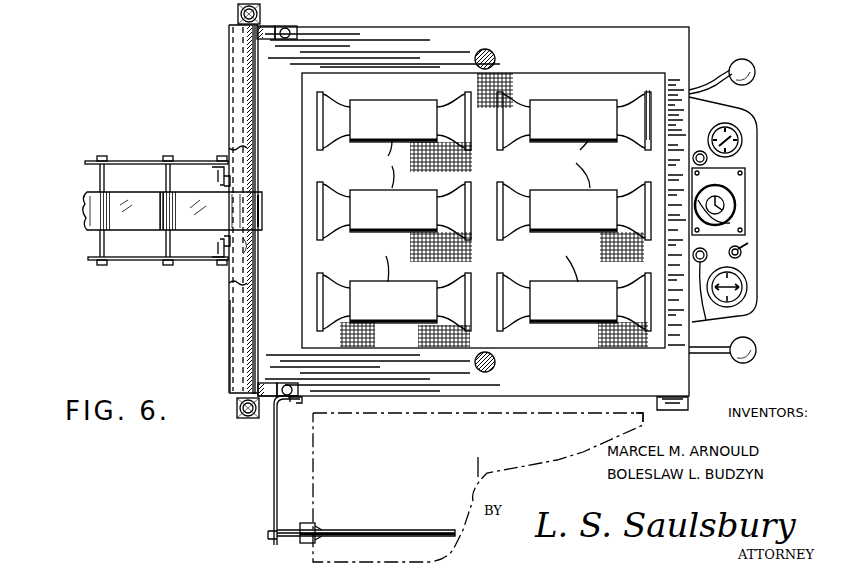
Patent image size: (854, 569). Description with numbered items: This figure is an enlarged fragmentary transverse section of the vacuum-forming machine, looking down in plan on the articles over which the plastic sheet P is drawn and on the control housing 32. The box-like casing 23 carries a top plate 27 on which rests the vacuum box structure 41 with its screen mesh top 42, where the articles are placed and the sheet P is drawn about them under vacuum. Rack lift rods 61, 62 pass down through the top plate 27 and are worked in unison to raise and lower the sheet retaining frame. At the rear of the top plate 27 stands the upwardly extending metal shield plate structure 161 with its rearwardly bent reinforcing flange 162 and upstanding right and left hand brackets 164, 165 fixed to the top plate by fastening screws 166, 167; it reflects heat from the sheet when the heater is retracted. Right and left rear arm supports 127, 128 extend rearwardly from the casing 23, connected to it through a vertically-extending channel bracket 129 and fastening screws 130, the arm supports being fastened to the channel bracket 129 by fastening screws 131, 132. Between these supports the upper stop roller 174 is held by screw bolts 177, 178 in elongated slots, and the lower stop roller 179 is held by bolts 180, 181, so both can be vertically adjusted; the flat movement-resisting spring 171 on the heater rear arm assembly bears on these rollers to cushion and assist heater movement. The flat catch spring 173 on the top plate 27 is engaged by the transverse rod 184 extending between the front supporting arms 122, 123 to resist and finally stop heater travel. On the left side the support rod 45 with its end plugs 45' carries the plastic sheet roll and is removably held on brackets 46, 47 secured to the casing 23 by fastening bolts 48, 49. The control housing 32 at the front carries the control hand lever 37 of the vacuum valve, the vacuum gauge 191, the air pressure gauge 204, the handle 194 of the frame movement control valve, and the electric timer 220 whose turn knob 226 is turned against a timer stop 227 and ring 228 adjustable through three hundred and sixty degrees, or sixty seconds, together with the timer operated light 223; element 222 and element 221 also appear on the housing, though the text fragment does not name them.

The box-like casing 23 is at (437, 26).
The top plate 27 is at (597, 44).
The box structure 41 is at (302, 152).
The screen mesh top 42 is at (512, 76).
The rack lift rod 61 is at (476, 56).
The rack lift rod 62 is at (477, 364).
The metal shield plate structure 161 is at (242, 94).
The reinforcing flange 162 is at (237, 345).
The front supporting arm 122 is at (259, 13).
The front supporting arm 123 is at (237, 408).
The right hand bracket 164 is at (266, 27).
The fastening screw 166 is at (291, 30).
The left hand bracket 165 is at (273, 378).
The fastening screw 167 is at (289, 385).
The right rear arm support 127 is at (145, 161).
The left rear arm support 128 is at (138, 261).
The screw bolt 178 is at (100, 156).
The screw bolt 177 is at (102, 266).
The bolt 181 is at (168, 156).
The bolt 180 is at (168, 266).
The lower stop roller 179 is at (161, 243).
The flat movement-resisting spring 171 is at (86, 199).
The upper stop roller 174 is at (96, 216).
The fastening screw 131 is at (220, 156).
The fastening screw 132 is at (218, 264).
The channel bracket 129 is at (218, 172).
The flat catch spring 173 is at (200, 222).
The fastening screws 130 is at (230, 180).
The transverse rod 184 is at (252, 246).
The bracket 47 is at (273, 448).
The fastening bolt 49 is at (303, 401).
The support rod 45 is at (366, 519).
The end plug 45' is at (300, 524).
The plastic sheet material P is at (478, 487).
The fastening bolt 48 is at (653, 422).
The control hand lever 37 is at (717, 78).
The control housing 32 is at (755, 212).
The vacuum gauge 191 is at (742, 134).
The timer operated light 223 is at (700, 150).
The timer stop 227 is at (716, 187).
The ring 228 is at (728, 196).
The electric timer 220 is at (735, 222).
The turn knob 226 is at (760, 223).
The toggle switch 221 is at (742, 250).
The air pressure gauge 204 is at (748, 284).
The indicator light with lead 222 is at (714, 310).
The handle 194 is at (731, 355).
The bracket 46 is at (684, 409).